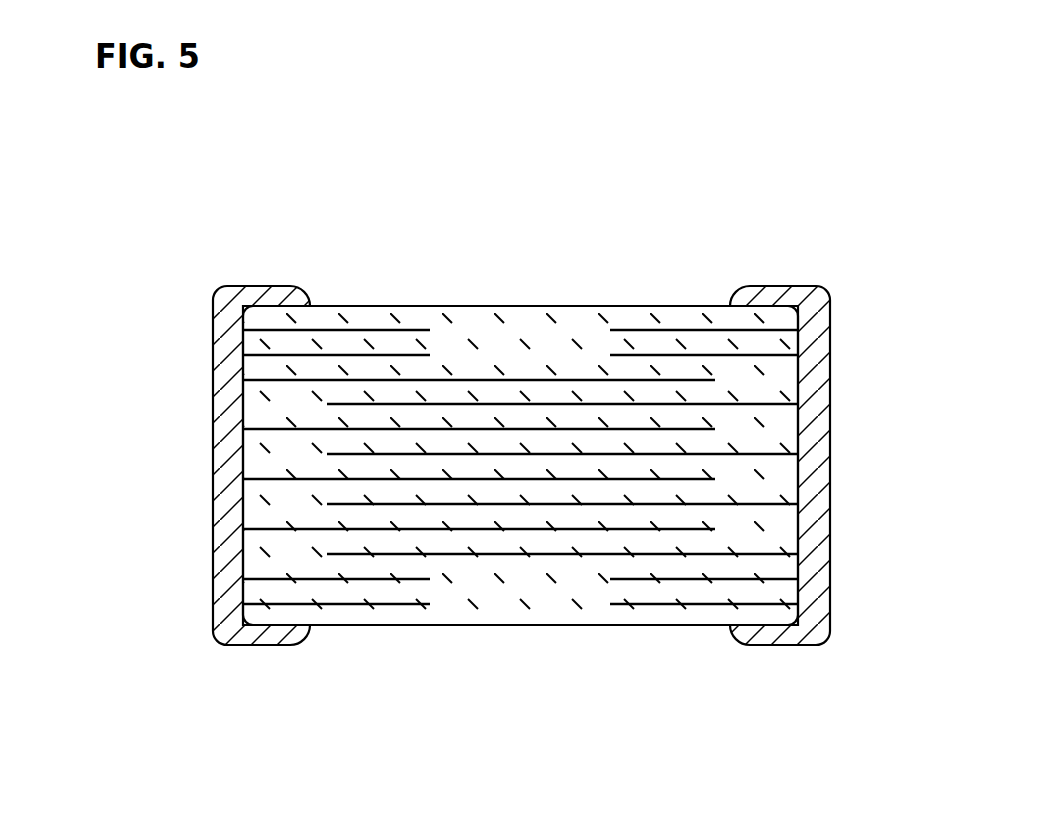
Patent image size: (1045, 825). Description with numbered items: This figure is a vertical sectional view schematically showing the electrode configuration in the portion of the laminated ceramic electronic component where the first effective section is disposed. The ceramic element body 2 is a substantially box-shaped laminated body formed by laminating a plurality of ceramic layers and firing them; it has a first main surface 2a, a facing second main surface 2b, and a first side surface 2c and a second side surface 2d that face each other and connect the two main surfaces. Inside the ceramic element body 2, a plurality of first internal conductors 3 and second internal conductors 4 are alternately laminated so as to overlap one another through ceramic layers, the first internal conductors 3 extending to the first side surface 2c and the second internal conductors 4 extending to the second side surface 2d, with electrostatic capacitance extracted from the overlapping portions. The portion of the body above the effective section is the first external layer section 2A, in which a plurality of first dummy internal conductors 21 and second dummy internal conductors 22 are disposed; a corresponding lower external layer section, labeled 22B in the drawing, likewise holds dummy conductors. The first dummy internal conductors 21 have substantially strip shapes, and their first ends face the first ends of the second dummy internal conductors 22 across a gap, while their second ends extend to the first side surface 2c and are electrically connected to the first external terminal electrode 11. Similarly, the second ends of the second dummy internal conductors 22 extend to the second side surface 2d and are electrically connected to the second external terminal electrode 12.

The ceramic element body 2 is at (491, 443).
The first external layer section 2A is at (481, 470).
The first main surface 2a is at (643, 307).
The second main surface 2b is at (453, 627).
The first side surface 2c is at (250, 517).
The second side surface 2d is at (793, 518).
The first internal conductor 3 is at (470, 376).
The second internal conductor 4 is at (771, 403).
The first external terminal electrode 11 is at (213, 415).
The second external terminal electrode 12 is at (829, 425).
The first dummy internal conductor 21 is at (376, 328).
The second dummy internal conductor 22 is at (683, 328).
The lower outer layer portion 22B is at (516, 612).